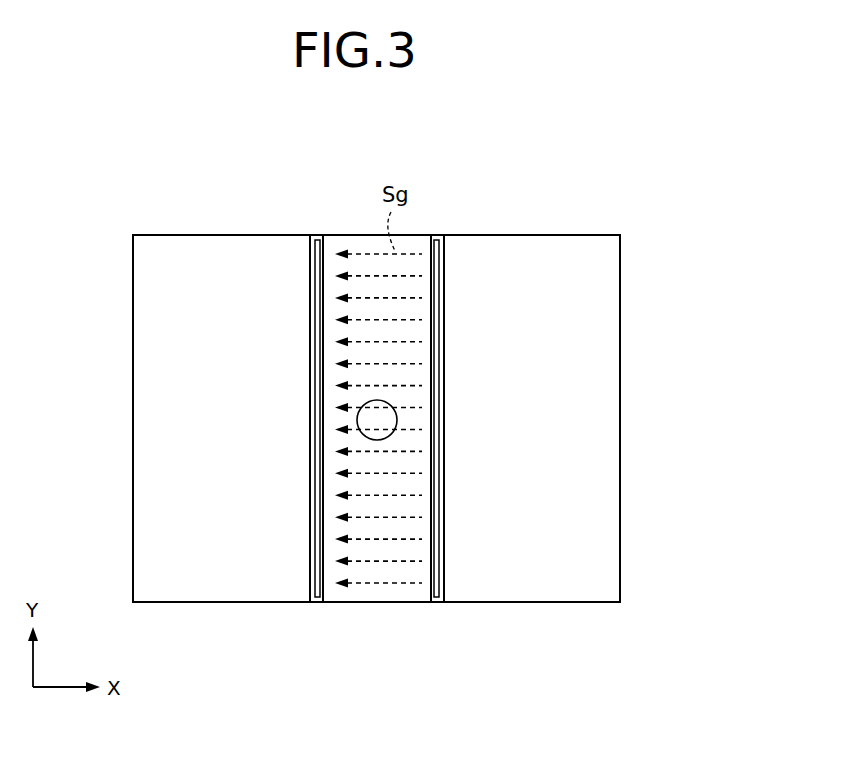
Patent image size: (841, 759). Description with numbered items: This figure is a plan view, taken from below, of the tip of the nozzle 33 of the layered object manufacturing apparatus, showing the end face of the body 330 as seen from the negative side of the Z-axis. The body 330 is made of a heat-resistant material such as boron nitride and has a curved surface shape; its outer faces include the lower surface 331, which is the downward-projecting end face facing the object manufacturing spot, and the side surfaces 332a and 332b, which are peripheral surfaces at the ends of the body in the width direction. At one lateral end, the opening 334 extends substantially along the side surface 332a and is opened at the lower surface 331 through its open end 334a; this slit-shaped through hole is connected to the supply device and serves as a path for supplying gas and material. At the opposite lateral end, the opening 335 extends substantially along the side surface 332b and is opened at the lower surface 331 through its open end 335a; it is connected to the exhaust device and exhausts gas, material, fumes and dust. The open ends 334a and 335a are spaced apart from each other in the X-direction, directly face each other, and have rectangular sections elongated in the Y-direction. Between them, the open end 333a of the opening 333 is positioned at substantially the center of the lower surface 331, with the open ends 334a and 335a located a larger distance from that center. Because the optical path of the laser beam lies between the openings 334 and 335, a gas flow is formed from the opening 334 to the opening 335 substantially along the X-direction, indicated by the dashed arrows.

The body 330 is at (401, 436).
The nozzle 33 is at (401, 472).
The lower surface 331 is at (383, 593).
The side surface 332a is at (582, 437).
The side surface 332b is at (160, 437).
The opening 333 is at (565, 402).
The open end 333a is at (387, 421).
The opening 334 is at (468, 456).
The open end 334a is at (427, 587).
The opening 335 is at (301, 456).
The open end 335a is at (332, 587).